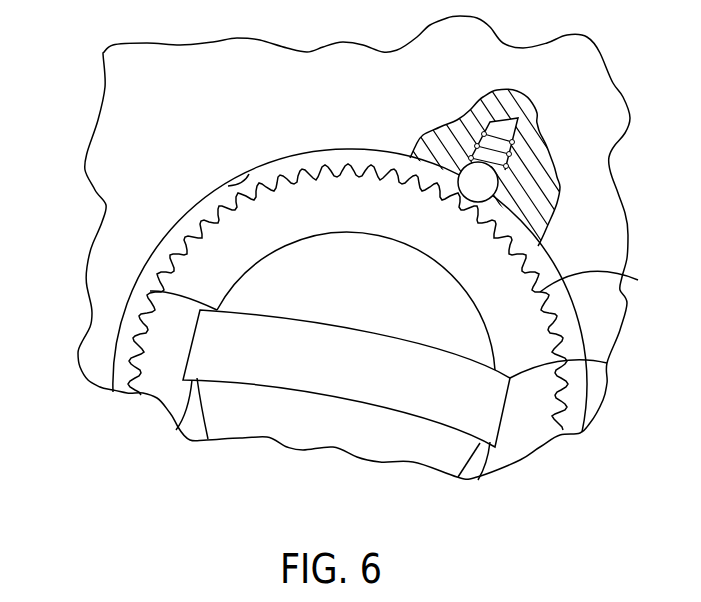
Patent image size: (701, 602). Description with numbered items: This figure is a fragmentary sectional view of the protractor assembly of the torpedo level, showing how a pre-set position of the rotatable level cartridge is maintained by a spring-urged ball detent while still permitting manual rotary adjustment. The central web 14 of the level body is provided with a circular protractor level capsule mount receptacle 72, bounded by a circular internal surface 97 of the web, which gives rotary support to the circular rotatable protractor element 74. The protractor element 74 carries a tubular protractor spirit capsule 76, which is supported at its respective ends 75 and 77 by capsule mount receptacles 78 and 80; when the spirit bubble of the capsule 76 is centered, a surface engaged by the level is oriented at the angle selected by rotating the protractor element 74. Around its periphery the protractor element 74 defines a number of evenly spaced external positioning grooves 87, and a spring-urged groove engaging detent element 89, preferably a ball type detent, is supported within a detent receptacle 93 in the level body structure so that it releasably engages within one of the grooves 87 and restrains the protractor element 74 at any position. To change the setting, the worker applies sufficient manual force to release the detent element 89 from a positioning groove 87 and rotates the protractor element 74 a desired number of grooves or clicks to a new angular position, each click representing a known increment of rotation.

The central web 14 is at (128, 92).
The circular protractor level capsule mount receptacle 72 is at (272, 163).
The circular rotatable protractor element 74 is at (210, 243).
The circular internal surface 97 is at (230, 185).
The capsule mount receptacle 78 is at (150, 291).
The external positioning grooves 87 is at (540, 292).
The capsule mount receptacle 80 is at (607, 363).
The protractor spirit capsule 76 is at (313, 338).
The end of protractor spirit capsule 75 is at (176, 416).
The end of protractor spirit capsule 77 is at (488, 444).
The detent receptacle 93 is at (512, 130).
The spring-urged groove engaging detent element 89 is at (488, 186).